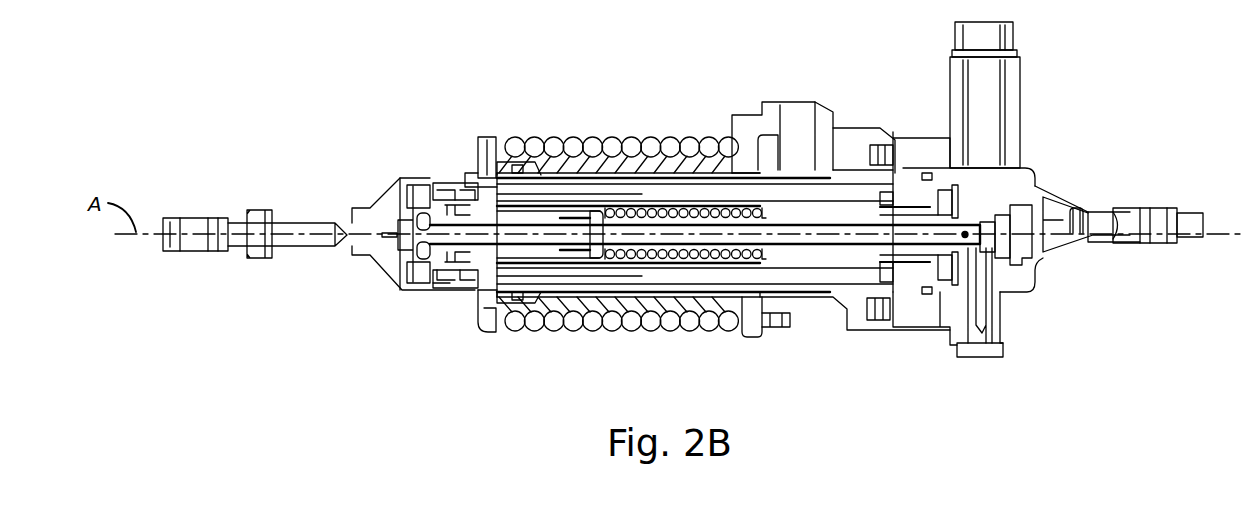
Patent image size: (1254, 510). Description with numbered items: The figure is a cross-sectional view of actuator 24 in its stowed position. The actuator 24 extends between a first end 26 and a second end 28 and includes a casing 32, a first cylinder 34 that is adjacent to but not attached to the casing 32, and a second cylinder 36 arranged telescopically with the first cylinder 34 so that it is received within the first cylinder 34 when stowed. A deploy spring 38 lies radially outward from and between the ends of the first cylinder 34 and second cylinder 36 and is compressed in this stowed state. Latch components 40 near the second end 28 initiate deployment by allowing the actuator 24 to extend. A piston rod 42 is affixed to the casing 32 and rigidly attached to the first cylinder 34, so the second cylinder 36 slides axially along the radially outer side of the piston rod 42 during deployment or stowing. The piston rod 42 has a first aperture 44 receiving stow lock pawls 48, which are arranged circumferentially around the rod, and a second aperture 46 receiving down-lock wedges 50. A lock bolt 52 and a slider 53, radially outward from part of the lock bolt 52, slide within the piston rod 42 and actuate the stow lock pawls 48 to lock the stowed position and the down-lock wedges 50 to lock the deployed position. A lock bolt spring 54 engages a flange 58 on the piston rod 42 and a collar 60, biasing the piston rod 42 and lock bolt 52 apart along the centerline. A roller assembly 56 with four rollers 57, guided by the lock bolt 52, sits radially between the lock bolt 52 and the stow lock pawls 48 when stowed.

The actuator 24 is at (718, 101).
The first end 26 is at (233, 210).
The second end 28 is at (1163, 197).
The casing 32 is at (895, 137).
The first cylinder 34 is at (750, 297).
The second cylinder 36 is at (523, 188).
The deploy spring 38 is at (600, 148).
The latch components 40 is at (1027, 170).
The piston rod 42 is at (580, 270).
The first aperture 44 is at (431, 213).
The second aperture 46 is at (486, 207).
The stow lock pawls 48 is at (440, 200).
The down-lock wedges 50 is at (494, 185).
The lock bolt 52 is at (447, 215).
The slider 53 is at (489, 293).
The lock bolt spring 54 is at (655, 305).
The roller assembly 56 is at (426, 276).
The rollers 57 is at (430, 272).
The flange 58 is at (600, 210).
The collar 60 is at (773, 252).